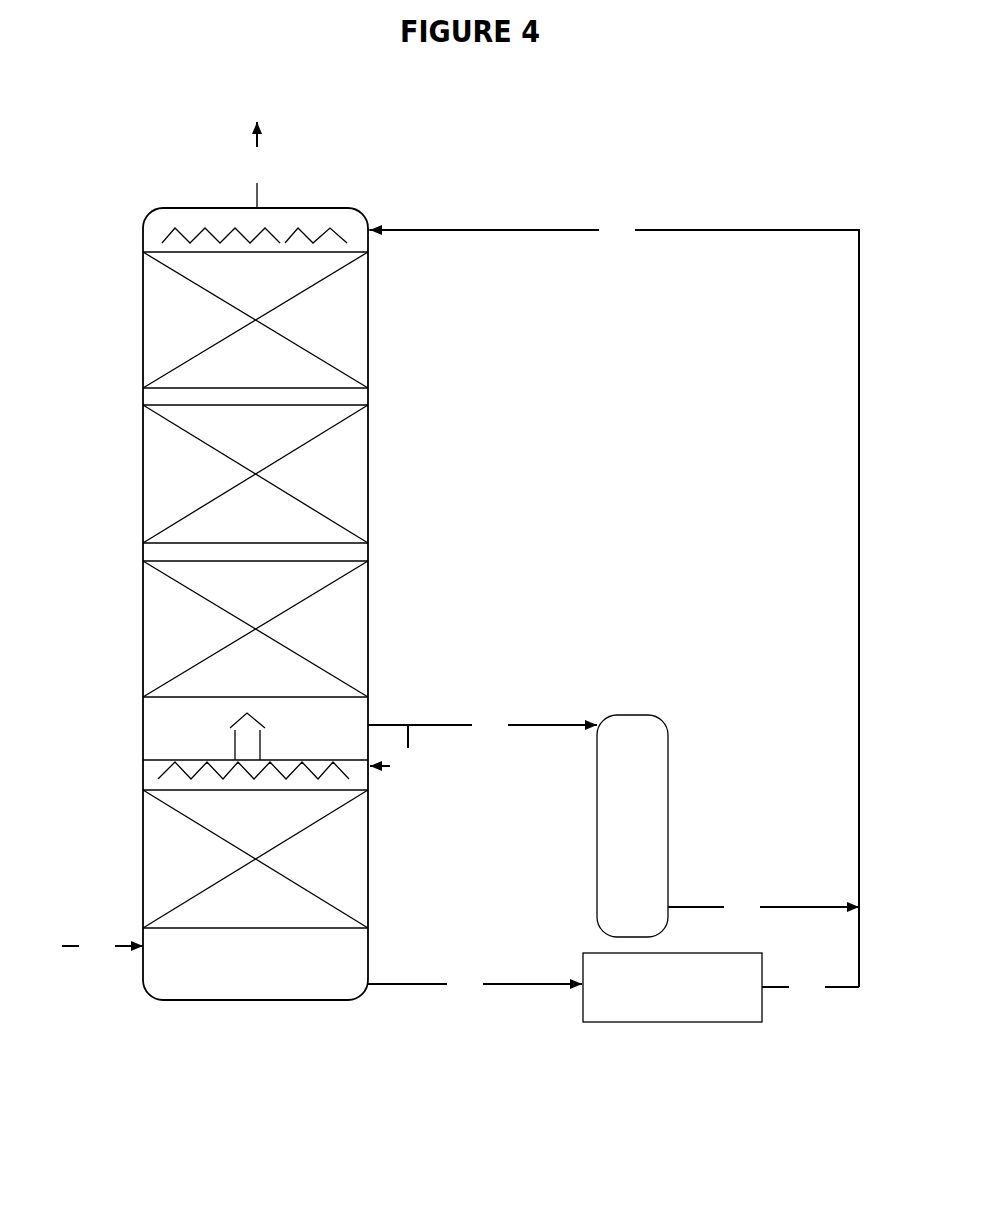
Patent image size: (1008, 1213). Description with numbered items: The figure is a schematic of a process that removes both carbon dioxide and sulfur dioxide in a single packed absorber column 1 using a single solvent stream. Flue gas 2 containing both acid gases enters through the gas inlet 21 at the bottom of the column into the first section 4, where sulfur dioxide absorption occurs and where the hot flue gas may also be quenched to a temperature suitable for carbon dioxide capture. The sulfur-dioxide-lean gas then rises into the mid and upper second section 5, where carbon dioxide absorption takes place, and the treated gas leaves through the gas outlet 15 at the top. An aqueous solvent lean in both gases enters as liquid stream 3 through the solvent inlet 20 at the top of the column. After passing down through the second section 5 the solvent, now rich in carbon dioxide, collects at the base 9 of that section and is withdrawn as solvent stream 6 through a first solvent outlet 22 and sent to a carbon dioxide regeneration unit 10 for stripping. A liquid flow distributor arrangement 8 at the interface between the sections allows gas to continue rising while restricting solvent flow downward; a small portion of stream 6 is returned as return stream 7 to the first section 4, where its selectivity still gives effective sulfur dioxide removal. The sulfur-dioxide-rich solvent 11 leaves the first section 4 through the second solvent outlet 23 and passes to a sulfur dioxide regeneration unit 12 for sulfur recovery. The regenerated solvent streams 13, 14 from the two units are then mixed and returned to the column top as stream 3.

The packed absorber column 1 is at (255, 625).
The flue gas 2 is at (102, 946).
The liquid stream 3 is at (614, 599).
The first section 4 is at (255, 859).
The second section 5 is at (255, 474).
The solvent stream 6 is at (482, 725).
The return stream 7 is at (398, 754).
The liquid flow distributor arrangement 8 is at (253, 752).
The base of the second section 9 is at (287, 733).
The CO2 regeneration unit 10 is at (641, 826).
The SO2 rich solvent 11 is at (475, 984).
The SO2 regeneration unit 12 is at (672, 998).
The regenerated solvent stream 13 is at (763, 907).
The regenerated solvent stream 14 is at (810, 987).
The gas outlet 15 is at (257, 165).
The solvent inlet 20 is at (378, 218).
The gas inlet 21 is at (133, 958).
The side outlet nozzle 22 is at (378, 715).
The second solvent outlet 23 is at (377, 993).